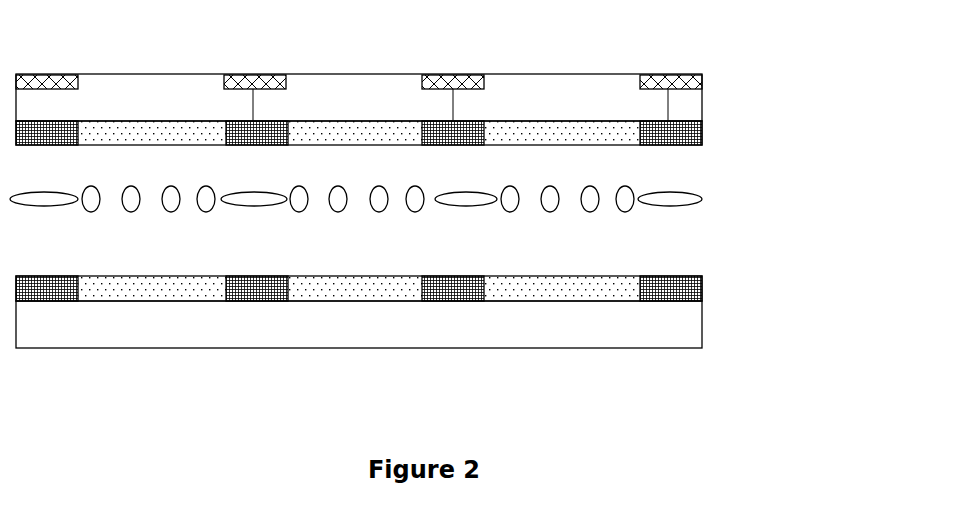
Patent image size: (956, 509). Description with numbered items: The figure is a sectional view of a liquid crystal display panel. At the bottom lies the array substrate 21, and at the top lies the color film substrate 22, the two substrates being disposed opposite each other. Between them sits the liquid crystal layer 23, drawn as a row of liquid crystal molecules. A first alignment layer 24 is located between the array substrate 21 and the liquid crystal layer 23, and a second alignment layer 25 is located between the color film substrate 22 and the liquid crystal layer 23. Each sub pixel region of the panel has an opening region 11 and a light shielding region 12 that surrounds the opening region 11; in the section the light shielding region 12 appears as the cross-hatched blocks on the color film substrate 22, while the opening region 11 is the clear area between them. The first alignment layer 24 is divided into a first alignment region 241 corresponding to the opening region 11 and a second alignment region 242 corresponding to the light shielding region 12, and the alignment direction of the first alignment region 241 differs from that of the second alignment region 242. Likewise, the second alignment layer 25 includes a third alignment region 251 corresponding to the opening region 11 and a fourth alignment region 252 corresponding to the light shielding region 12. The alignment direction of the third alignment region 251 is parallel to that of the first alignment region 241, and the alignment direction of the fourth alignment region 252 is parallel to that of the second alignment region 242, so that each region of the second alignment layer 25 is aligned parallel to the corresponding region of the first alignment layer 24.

The opening region 11 is at (146, 84).
The light shielding region 12 is at (47, 80).
The array substrate 21 is at (703, 329).
The color film substrate 22 is at (703, 102).
The liquid crystal layer 23 is at (703, 196).
The first alignment layer 24 is at (703, 291).
The second alignment layer 25 is at (703, 136).
The first alignment region 241 is at (158, 294).
The second alignment region 242 is at (41, 298).
The third alignment region 251 is at (180, 130).
The fourth alignment region 252 is at (61, 132).